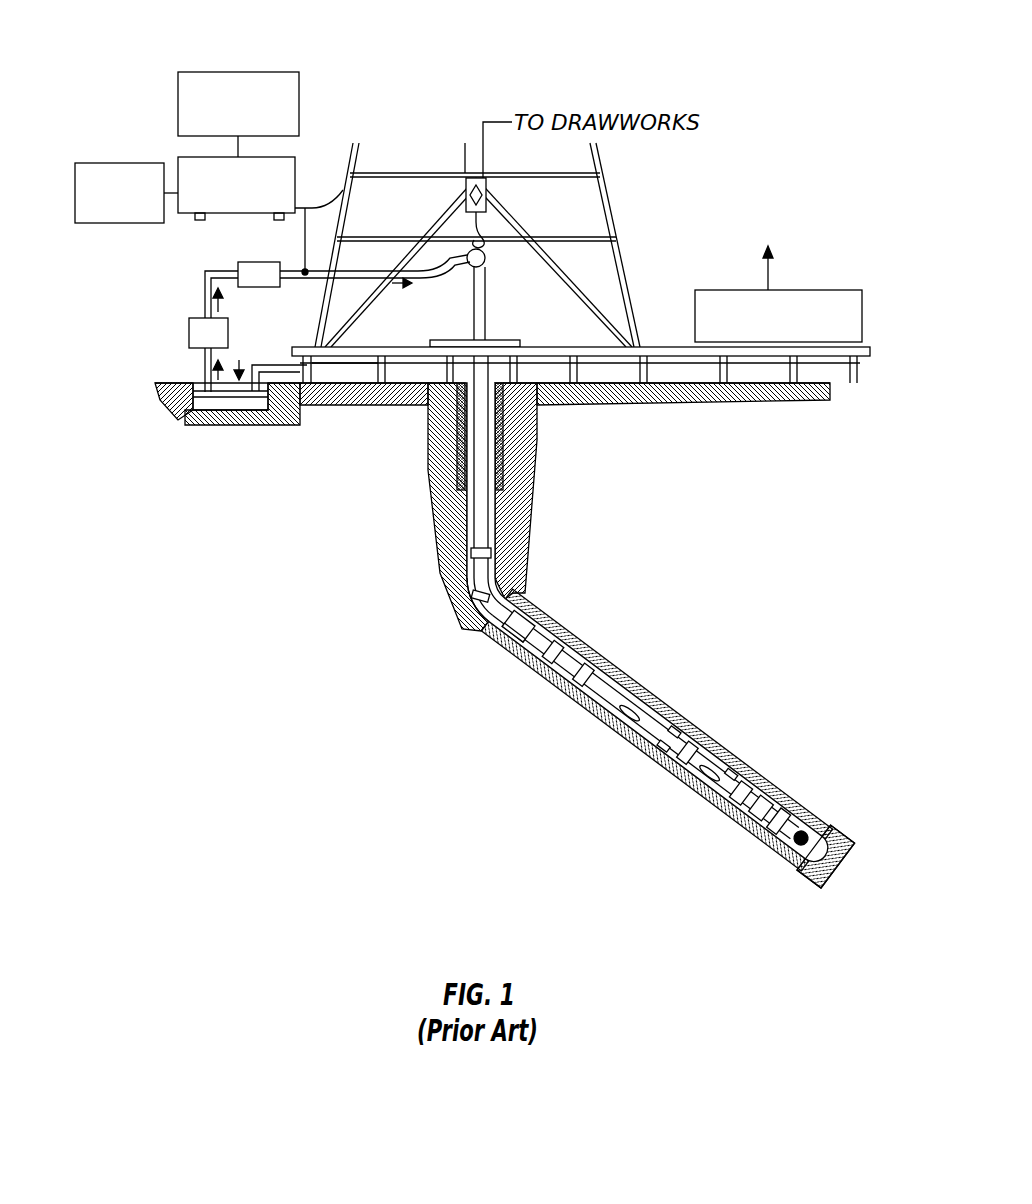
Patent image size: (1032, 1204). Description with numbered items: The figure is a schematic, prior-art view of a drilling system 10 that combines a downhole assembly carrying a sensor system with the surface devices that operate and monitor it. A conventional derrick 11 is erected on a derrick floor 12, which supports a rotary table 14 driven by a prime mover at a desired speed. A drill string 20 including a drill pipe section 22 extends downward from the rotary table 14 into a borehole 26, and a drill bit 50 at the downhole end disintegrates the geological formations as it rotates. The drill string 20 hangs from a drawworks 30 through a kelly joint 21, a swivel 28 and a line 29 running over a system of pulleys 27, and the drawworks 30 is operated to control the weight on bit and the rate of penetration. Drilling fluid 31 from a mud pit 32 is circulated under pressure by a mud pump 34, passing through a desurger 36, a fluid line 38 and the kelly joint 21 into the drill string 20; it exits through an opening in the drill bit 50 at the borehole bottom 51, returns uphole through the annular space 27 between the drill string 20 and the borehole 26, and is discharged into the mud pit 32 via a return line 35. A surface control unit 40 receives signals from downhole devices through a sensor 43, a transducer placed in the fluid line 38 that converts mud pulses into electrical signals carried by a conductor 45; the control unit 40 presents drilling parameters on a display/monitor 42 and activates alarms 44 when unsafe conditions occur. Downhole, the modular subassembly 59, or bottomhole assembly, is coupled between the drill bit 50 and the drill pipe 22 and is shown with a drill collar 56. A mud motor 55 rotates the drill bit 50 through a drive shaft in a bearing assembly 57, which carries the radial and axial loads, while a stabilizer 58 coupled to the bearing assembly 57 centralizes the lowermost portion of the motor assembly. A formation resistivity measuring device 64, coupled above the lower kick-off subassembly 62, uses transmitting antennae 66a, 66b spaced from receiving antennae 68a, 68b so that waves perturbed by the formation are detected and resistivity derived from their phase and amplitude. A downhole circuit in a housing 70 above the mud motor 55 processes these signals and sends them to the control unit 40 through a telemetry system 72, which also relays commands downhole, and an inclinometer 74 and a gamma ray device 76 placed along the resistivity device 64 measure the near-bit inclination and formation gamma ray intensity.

The drilling system 10 is at (650, 72).
The derrick 11 is at (620, 228).
The derrick floor 12 is at (636, 347).
The rotary table 14 is at (500, 343).
The drill string 20 is at (503, 490).
The kelly joint 21 is at (486, 297).
The drill pipe section 22 is at (474, 548).
The borehole 26 is at (520, 608).
The annular space 27 is at (530, 625).
The swivel 28 is at (462, 268).
The line 29 is at (486, 165).
The drawworks 30 is at (800, 290).
The drilling fluid 31 is at (200, 412).
The mud pit 32 is at (265, 412).
The mud pump 34 is at (189, 328).
The return line 35 is at (333, 368).
The desurger 36 is at (244, 262).
The fluid line 38 is at (296, 286).
The surface control unit 40 is at (292, 157).
The display/monitor 42 is at (256, 72).
The sensor 43 is at (304, 268).
The alarms 44 is at (105, 163).
The conductor 45 is at (339, 224).
The drill bit 50 is at (840, 845).
The borehole bottom 51 is at (800, 866).
The mud motor 55 is at (577, 660).
The drill collar 56 is at (612, 678).
The bearing assembly 57 is at (712, 816).
The stabilizer 58 is at (788, 808).
The downhole subassembly 59 is at (616, 606).
The lower kick-off subassembly 62 is at (769, 795).
The formation resistivity measuring device 64 is at (681, 766).
The transmitting antenna 66a is at (622, 722).
The transmitting antenna 66b is at (700, 780).
The receiving antenna 68a is at (650, 745).
The receiving antenna 68b is at (678, 730).
The housing 70 is at (489, 630).
The telemetry system 72 is at (481, 592).
The inclinometer 74 is at (733, 768).
The gamma ray device 76 is at (749, 780).